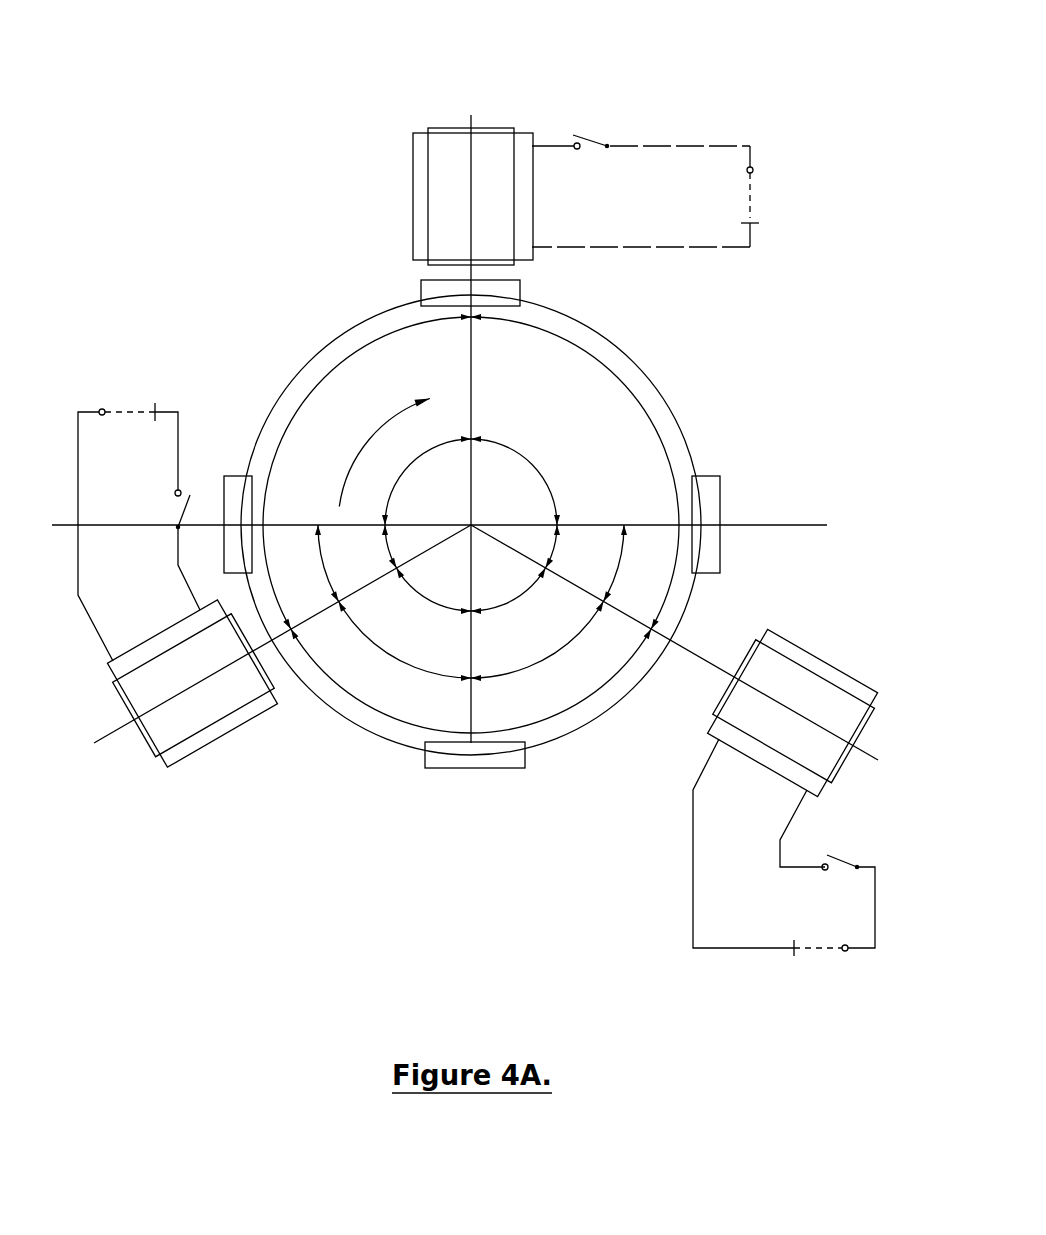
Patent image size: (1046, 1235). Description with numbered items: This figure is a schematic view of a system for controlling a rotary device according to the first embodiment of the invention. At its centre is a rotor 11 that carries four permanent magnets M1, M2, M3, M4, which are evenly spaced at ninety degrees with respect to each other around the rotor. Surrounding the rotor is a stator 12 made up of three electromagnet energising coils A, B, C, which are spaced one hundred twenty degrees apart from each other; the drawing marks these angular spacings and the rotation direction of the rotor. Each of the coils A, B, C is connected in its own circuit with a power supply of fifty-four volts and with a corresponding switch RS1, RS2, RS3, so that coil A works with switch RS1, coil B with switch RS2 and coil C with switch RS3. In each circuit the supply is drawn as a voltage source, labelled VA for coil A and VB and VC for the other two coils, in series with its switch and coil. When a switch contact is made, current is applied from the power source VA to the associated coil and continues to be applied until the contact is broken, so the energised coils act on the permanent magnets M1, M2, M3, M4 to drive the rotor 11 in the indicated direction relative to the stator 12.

The rotor 11 is at (703, 405).
The stator 12 is at (735, 143).
The electromagnet energising coil A is at (453, 170).
The electromagnet energising coil B is at (792, 682).
The electromagnet energising coil C is at (245, 722).
The permanent magnet M1 is at (470, 294).
The permanent magnet M2 is at (705, 524).
The permanent magnet M3 is at (475, 756).
The permanent magnet M4 is at (238, 524).
The switch RS1 is at (580, 135).
The switch RS2 is at (837, 855).
The switch RS3 is at (187, 493).
The power source VA is at (753, 197).
The voltage source VB is at (804, 958).
The voltage source VC is at (130, 402).